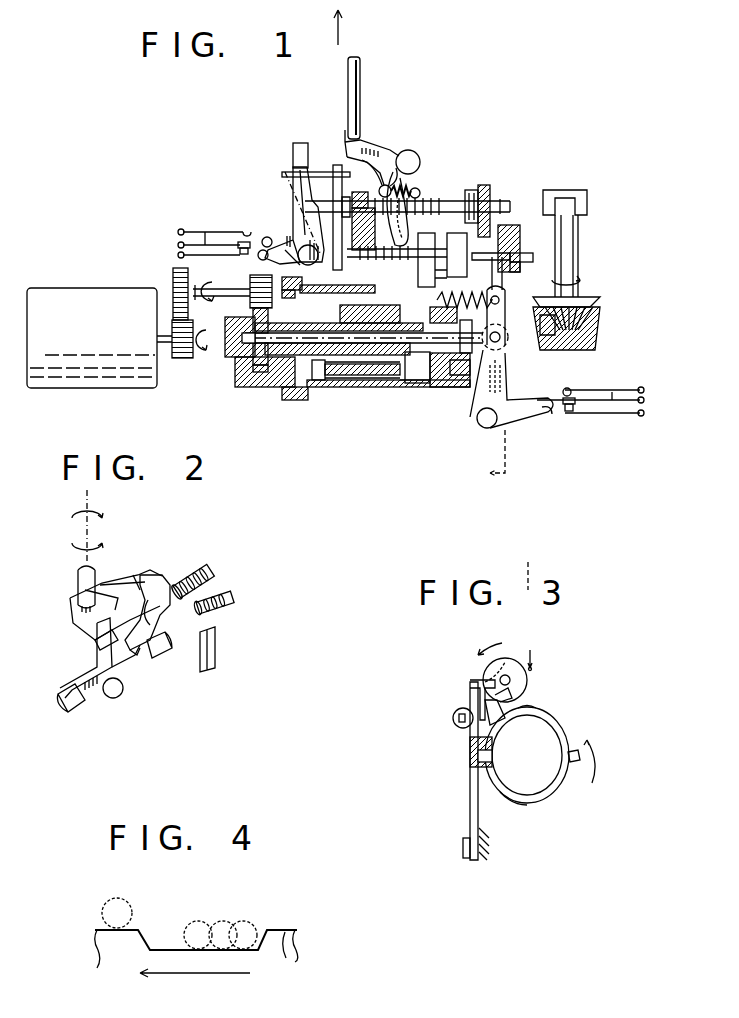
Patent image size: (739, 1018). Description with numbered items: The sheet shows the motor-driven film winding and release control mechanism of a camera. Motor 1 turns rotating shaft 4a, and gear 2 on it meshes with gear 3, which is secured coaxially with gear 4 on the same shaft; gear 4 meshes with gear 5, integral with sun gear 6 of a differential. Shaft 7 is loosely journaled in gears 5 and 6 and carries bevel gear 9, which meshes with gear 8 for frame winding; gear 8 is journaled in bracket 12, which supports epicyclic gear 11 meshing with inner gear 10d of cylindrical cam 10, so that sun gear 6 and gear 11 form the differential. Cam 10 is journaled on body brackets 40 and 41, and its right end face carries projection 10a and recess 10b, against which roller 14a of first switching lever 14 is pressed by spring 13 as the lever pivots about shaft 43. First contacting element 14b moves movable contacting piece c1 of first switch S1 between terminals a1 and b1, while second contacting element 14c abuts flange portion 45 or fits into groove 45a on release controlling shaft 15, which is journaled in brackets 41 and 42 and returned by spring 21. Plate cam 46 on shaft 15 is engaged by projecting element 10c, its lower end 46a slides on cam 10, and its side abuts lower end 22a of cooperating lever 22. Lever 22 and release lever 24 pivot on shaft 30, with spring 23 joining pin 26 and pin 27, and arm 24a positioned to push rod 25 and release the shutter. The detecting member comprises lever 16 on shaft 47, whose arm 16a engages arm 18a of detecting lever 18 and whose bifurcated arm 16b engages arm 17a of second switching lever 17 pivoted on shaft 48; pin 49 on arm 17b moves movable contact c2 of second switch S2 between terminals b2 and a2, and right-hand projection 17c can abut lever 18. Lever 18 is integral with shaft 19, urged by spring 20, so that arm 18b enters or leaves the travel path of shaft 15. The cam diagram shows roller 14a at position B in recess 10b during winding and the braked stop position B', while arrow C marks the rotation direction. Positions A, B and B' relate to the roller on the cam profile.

In FIG. 1, the motor 1 is at (72, 289).
In FIG. 1, the gear 2 is at (181, 358).
In FIG. 1, the gear 3 is at (173, 275).
In FIG. 1, the gear 4 is at (252, 278).
In FIG. 1, the rotating shaft 4a is at (223, 300).
In FIG. 1, the gear 5 is at (262, 340).
In FIG. 1, the sun gear 6 is at (340, 324).
In FIG. 1, the shaft 7 is at (303, 346).
In FIG. 1, the gear 8 is at (596, 312).
In FIG. 1, the bevel gear 9 is at (545, 350).
In FIG. 1, the cylindrical cam 10 is at (344, 387).
In FIG. 3, the cylindrical cam 10 is at (572, 742).
In FIG. 1, the projection 10a is at (466, 388).
In FIG. 3, the projection 10a is at (521, 803).
In FIG. 4, the projection 10a is at (286, 962).
In FIG. 1, the recess 10b is at (455, 378).
In FIG. 3, the recess 10b is at (553, 722).
In FIG. 4, the recess 10b is at (222, 950).
In FIG. 1, the projecting element 10c is at (410, 388).
In FIG. 3, the projecting element 10c is at (577, 762).
In FIG. 1, the inner gear 10d is at (353, 380).
In FIG. 1, the epicyclic gear 11 is at (336, 380).
In FIG. 1, the bracket 12 is at (404, 357).
In FIG. 1, the spring 13 is at (503, 300).
In FIG. 1, the first switching lever 14 is at (518, 430).
In FIG. 3, the first switching lever 14 is at (470, 780).
In FIG. 1, the roller 14a is at (505, 370).
In FIG. 3, the roller 14a is at (482, 770).
In FIG. 1, the first contacting element 14b is at (547, 414).
In FIG. 1, the second contacting element 14c is at (533, 256).
In FIG. 3, the second contacting element 14c is at (470, 681).
In FIG. 1, the release controlling shaft 15 is at (512, 225).
In FIG. 2, the release controlling shaft 15 is at (232, 600).
In FIG. 3, the release controlling shaft 15 is at (486, 672).
In FIG. 1, the lever 16 is at (326, 172).
In FIG. 2, the lever 16 is at (78, 612).
In FIG. 2, the arm 16a is at (133, 575).
In FIG. 2, the bifurcated arm 16b is at (95, 642).
In FIG. 1, the second switching lever 17 is at (296, 205).
In FIG. 2, the second switching lever 17 is at (97, 662).
In FIG. 1, the arm 17a is at (295, 168).
In FIG. 2, the arm 17a is at (128, 672).
In FIG. 1, the arm 17b is at (274, 256).
In FIG. 2, the arm 17b is at (95, 700).
In FIG. 1, the right-hand projection 17c is at (312, 180).
In FIG. 2, the right-hand projection 17c is at (125, 590).
In FIG. 1, the detecting lever 18 is at (372, 228).
In FIG. 2, the detecting lever 18 is at (172, 650).
In FIG. 2, the arm 18a is at (153, 575).
In FIG. 2, the arm 18b is at (140, 652).
In FIG. 1, the shaft 19 is at (472, 190).
In FIG. 2, the shaft 19 is at (204, 572).
In FIG. 1, the spring 20 is at (450, 205).
In FIG. 2, the spring 20 is at (200, 588).
In FIG. 1, the spring 21 is at (388, 303).
In FIG. 1, the cooperating lever 22 is at (378, 152).
In FIG. 1, the lower end 22a is at (400, 324).
In FIG. 1, the spring 23 is at (417, 188).
In FIG. 1, the release lever 24 is at (370, 140).
In FIG. 1, the arm 24a is at (345, 136).
In FIG. 1, the rod 25 is at (348, 90).
In FIG. 1, the pin 26 is at (345, 200).
In FIG. 1, the pin 27 is at (412, 213).
In FIG. 1, the shaft 30 is at (410, 150).
In FIG. 1, the body bracket 40 is at (262, 387).
In FIG. 1, the body bracket 41 is at (350, 258).
In FIG. 2, the body bracket 41 is at (215, 662).
In FIG. 1, the bracket 42 is at (490, 190).
In FIG. 1, the shaft 43 is at (477, 420).
In FIG. 1, the flange portion 45 is at (457, 233).
In FIG. 3, the flange portion 45 is at (510, 665).
In FIG. 1, the groove 45a is at (505, 278).
In FIG. 3, the groove 45a is at (512, 698).
In FIG. 1, the plate cam 46 is at (424, 300).
In FIG. 3, the plate cam 46 is at (540, 659).
In FIG. 3, the lower end 46a is at (485, 702).
In FIG. 1, the shaft 47 is at (294, 148).
In FIG. 2, the shaft 47 is at (78, 582).
In FIG. 1, the shaft 48 is at (296, 298).
In FIG. 2, the shaft 48 is at (115, 698).
In FIG. 1, the pin 49 is at (265, 260).
In FIG. 2, the pin 49 is at (68, 710).
In FIG. 1, the first switch S1 is at (650, 399).
In FIG. 1, the second switch S2 is at (170, 242).
In FIG. 1, the terminal a1 is at (574, 408).
In FIG. 1, the terminal b1 is at (570, 390).
In FIG. 1, the movable contacting piece c1 is at (612, 392).
In FIG. 1, the terminal a2 is at (244, 232).
In FIG. 1, the terminal b2 is at (240, 254).
In FIG. 1, the movable contact c2 is at (205, 232).
In FIG. 1, the rotation direction C is at (202, 341).
In FIG. 4, the ball position A is at (117, 905).
In FIG. 4, the position B is at (233, 923).
In FIG. 4, the position B' is at (198, 923).